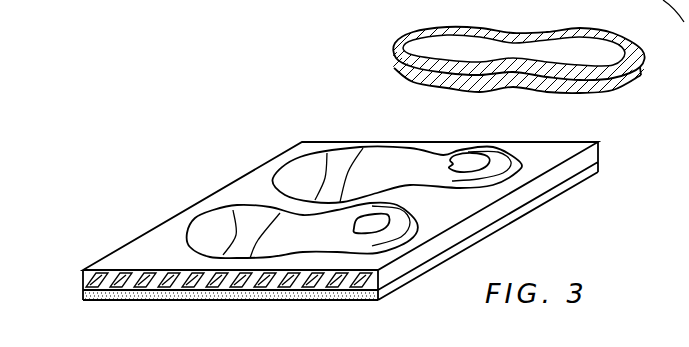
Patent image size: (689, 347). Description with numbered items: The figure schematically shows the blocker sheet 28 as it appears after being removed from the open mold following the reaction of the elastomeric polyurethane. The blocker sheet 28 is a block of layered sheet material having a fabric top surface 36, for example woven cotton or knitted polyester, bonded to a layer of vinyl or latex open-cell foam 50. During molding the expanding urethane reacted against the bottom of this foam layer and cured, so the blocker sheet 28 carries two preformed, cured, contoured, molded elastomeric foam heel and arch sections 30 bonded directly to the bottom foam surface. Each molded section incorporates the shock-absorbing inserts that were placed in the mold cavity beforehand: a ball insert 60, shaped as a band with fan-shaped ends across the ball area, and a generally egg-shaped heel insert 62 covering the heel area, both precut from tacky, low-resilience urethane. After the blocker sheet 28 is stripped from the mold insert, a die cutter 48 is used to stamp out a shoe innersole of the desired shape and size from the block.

The blocker sheet 28 is at (320, 188).
The heel and arch sections 30 is at (500, 176).
The fabric top surface 36 is at (84, 297).
The die cutter 48 is at (577, 44).
The open-cell foam layer 50 is at (84, 276).
The ball insert 60 is at (247, 238).
The heel insert 62 is at (472, 158).